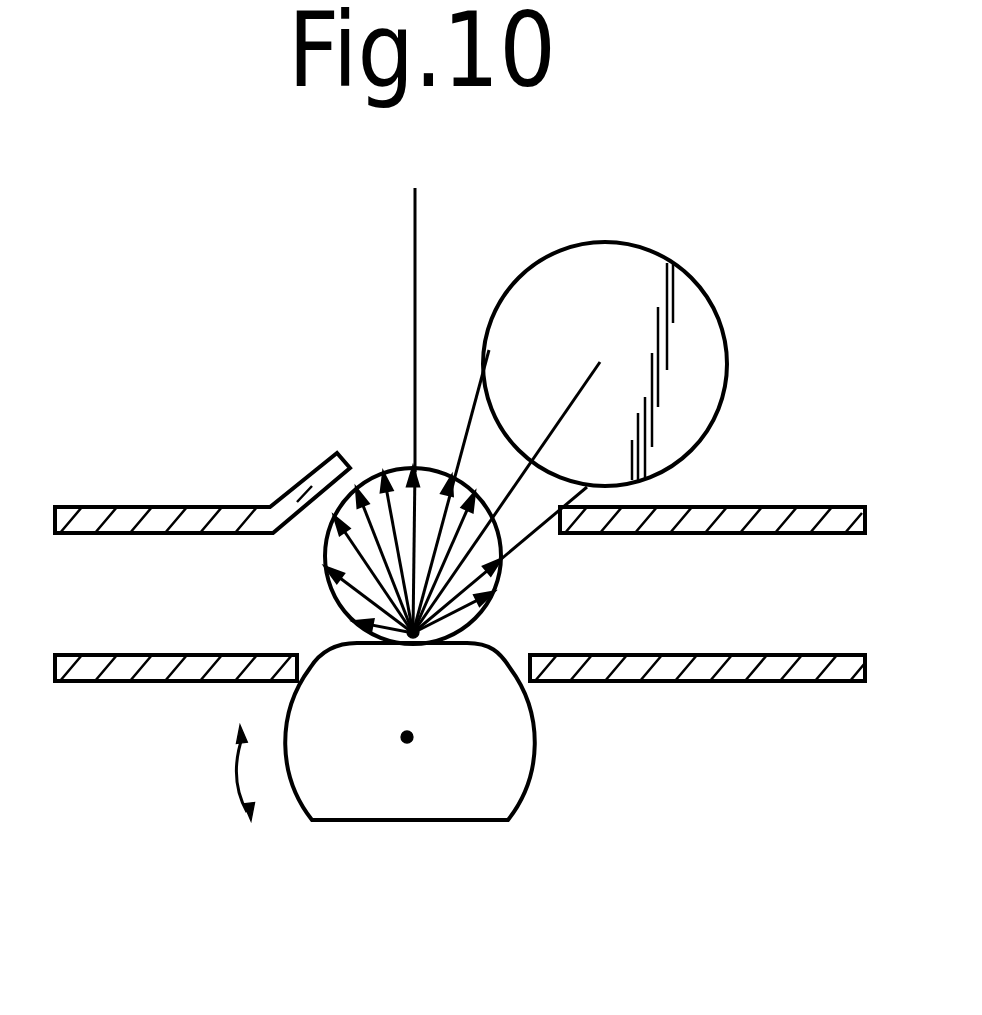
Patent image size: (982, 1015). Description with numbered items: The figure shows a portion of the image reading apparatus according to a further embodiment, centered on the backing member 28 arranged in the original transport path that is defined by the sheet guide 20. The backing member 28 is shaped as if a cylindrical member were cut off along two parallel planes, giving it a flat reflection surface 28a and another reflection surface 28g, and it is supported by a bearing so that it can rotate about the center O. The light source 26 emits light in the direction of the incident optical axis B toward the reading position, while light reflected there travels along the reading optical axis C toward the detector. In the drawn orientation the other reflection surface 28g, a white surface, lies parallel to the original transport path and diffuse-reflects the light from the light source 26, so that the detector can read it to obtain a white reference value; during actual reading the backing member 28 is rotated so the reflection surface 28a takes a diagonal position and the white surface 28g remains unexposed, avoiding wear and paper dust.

The sheet guide 20 is at (838, 520).
The light source 26 is at (687, 298).
The backing member 28 is at (348, 772).
The reflection surface 28a is at (465, 823).
The other reflection surface 28g is at (470, 630).
The incident optical axis B is at (567, 407).
The reading optical axis C is at (415, 294).
The center O is at (434, 728).